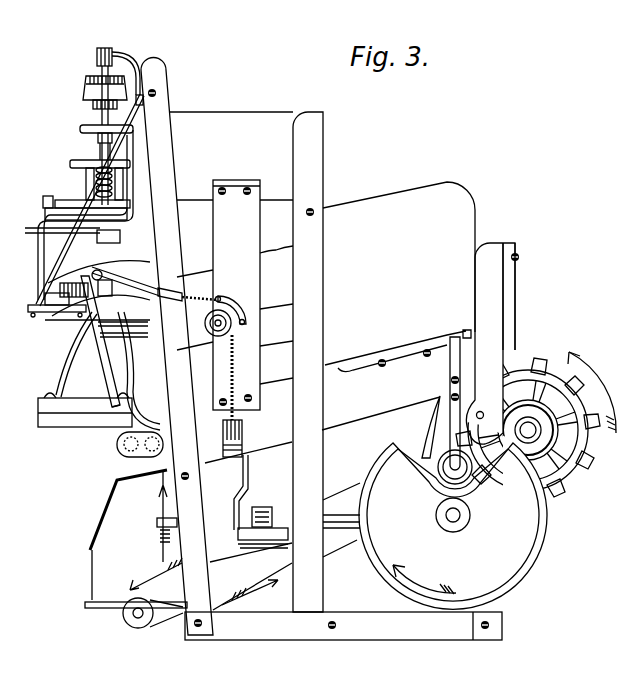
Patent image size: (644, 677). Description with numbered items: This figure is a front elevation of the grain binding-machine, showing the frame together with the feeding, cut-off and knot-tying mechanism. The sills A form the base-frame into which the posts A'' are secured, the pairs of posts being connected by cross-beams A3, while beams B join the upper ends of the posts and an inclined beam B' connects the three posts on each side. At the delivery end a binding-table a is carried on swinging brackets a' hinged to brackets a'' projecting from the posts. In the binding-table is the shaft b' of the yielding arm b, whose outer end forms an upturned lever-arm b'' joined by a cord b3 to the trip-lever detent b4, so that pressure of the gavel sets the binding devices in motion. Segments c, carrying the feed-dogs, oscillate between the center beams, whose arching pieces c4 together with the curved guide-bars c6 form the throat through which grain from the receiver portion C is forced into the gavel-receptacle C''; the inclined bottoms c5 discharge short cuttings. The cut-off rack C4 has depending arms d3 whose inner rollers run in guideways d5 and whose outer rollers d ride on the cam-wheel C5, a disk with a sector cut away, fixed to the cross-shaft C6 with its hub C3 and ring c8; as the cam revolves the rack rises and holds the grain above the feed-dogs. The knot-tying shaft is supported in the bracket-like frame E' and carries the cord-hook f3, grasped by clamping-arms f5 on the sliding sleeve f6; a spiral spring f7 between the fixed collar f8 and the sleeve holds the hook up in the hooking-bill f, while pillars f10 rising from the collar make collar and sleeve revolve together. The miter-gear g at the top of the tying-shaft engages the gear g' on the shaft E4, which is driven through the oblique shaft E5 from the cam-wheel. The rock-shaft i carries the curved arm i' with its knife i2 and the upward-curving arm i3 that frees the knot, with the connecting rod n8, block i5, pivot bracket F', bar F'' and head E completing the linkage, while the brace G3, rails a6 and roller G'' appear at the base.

The front and rear sills A is at (343, 626).
The posts A'' is at (330, 347).
The cross-beams A3 is at (520, 296).
The beams B is at (246, 362).
The inclined beam B' is at (396, 380).
The grain-receiver portion C is at (399, 242).
The gavel-receptacle C'' is at (140, 384).
The gear hub C3 is at (528, 430).
The cut-off rack C4 is at (536, 427).
The cam-wheel C5 is at (453, 526).
The cross-shaft C6 is at (461, 513).
The segments c is at (276, 261).
The arching pieces c4 is at (276, 313).
The inclined bottoms c5 is at (276, 362).
The curved guide-bars c6 is at (195, 303).
The gear ring c8 is at (542, 412).
The roller d is at (441, 477).
The depending arm d3 is at (445, 403).
The guideways d5 is at (434, 405).
The hand wheel knob E is at (119, 117).
The bracket-like frame E' is at (69, 215).
The shaft E4 is at (341, 512).
The oblique shaft E5 is at (136, 539).
The pivot block F' is at (57, 313).
The pivot bar F'' is at (45, 306).
The roller wheel G'' is at (139, 619).
The diagonal brace G3 is at (282, 526).
The binding-table a is at (75, 412).
The swinging brackets a' is at (70, 355).
The brackets a'' is at (105, 200).
The guide rails a6 is at (123, 342).
The lever arm b is at (100, 341).
The shaft b' is at (107, 411).
The upturned lever-arm b'' is at (137, 371).
The cord b3 is at (228, 320).
The trip-lever detent b4 is at (255, 441).
The hooking-bill f is at (92, 199).
The cord-hook f3 is at (104, 121).
The clamping-arms f5 is at (93, 140).
The sliding sleeve f6 is at (91, 151).
The spiral spring f7 is at (100, 162).
The fixed collar f8 is at (89, 183).
The pillars f10 is at (105, 184).
The miter-gear wheel g is at (98, 83).
The miter-gear wheel g' is at (93, 100).
The rock-shaft i is at (85, 208).
The curved arm i' is at (61, 226).
The knife i2 is at (74, 273).
The upward-curving arm i3 is at (97, 290).
The block i5 is at (89, 239).
The connecting rod n8 is at (155, 280).